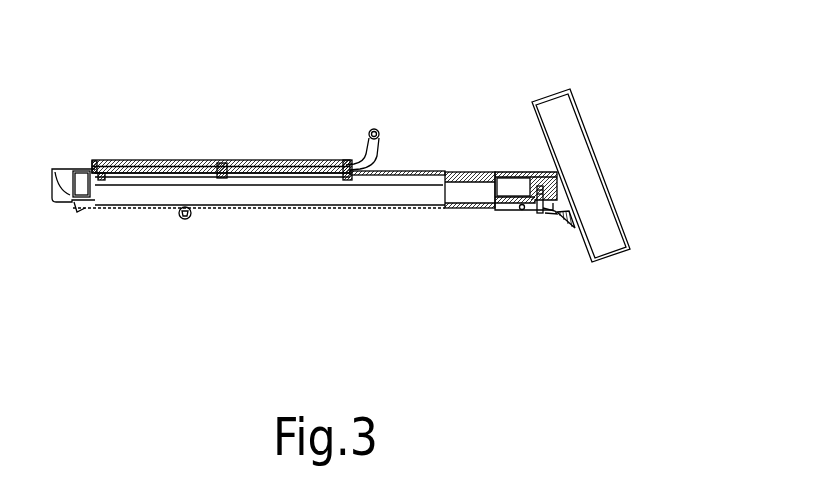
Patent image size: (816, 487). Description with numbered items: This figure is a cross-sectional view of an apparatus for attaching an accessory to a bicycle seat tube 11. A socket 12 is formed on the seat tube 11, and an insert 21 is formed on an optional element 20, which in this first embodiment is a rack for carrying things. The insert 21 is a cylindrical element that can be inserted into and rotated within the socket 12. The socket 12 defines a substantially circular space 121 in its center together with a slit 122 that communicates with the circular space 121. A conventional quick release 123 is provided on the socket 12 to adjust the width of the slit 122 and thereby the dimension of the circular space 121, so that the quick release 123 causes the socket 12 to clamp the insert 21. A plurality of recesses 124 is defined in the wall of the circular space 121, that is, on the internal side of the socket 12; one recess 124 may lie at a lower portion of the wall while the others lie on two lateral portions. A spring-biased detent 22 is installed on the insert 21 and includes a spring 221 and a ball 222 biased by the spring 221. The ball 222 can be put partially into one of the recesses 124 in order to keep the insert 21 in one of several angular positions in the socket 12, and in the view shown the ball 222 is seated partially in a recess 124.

The seat tube 11 is at (585, 140).
The socket 12 is at (609, 192).
The optional element 20 is at (312, 162).
The insert 21 is at (500, 170).
The spring-biased detent 22 is at (648, 201).
The substantially circular space 121 is at (558, 192).
The slit 122 is at (507, 209).
The quick release 123 is at (522, 211).
The recesses 124 is at (546, 213).
The spring 221 is at (545, 199).
The ball 222 is at (553, 212).